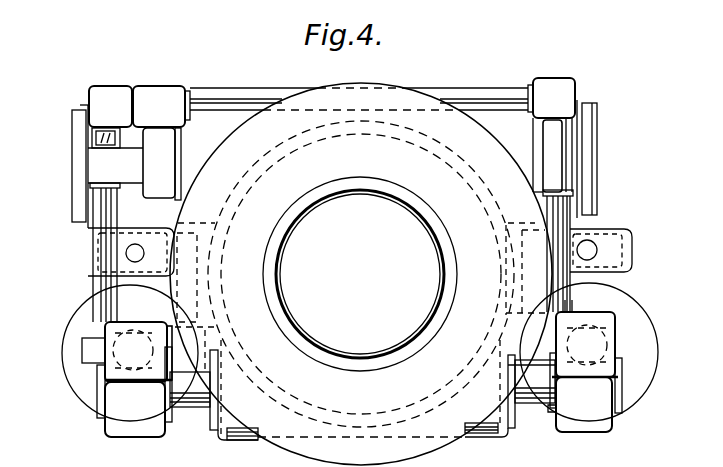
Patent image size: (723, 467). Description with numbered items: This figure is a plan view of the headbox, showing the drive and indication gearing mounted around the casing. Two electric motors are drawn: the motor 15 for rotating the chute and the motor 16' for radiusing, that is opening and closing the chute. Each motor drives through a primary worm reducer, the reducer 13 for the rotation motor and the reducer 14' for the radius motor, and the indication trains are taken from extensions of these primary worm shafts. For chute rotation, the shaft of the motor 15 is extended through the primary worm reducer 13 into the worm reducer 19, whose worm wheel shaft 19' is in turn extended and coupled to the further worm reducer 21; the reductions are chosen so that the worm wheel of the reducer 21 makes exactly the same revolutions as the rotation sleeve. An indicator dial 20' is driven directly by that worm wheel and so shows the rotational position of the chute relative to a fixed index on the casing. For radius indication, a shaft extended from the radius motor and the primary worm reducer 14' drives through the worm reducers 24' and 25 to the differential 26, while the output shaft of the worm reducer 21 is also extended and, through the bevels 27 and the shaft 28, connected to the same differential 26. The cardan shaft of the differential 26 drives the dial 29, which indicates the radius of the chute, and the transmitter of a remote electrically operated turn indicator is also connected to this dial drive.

The primary worm reducer 13 is at (583, 424).
The primary worm reducer 14' is at (134, 402).
The electric motor 15 is at (642, 360).
The electric motor 16' is at (116, 353).
The worm reducer 19 is at (624, 341).
The worm wheel shaft 19' is at (622, 298).
The indicator dial 20' is at (605, 159).
The worm reducer 21 is at (557, 176).
The worm reducer 24' is at (92, 352).
The worm reducer 25 is at (100, 96).
The differential 26 is at (150, 93).
The bevels 27 is at (553, 88).
The shaft 28 is at (496, 87).
The dial 29 is at (76, 152).